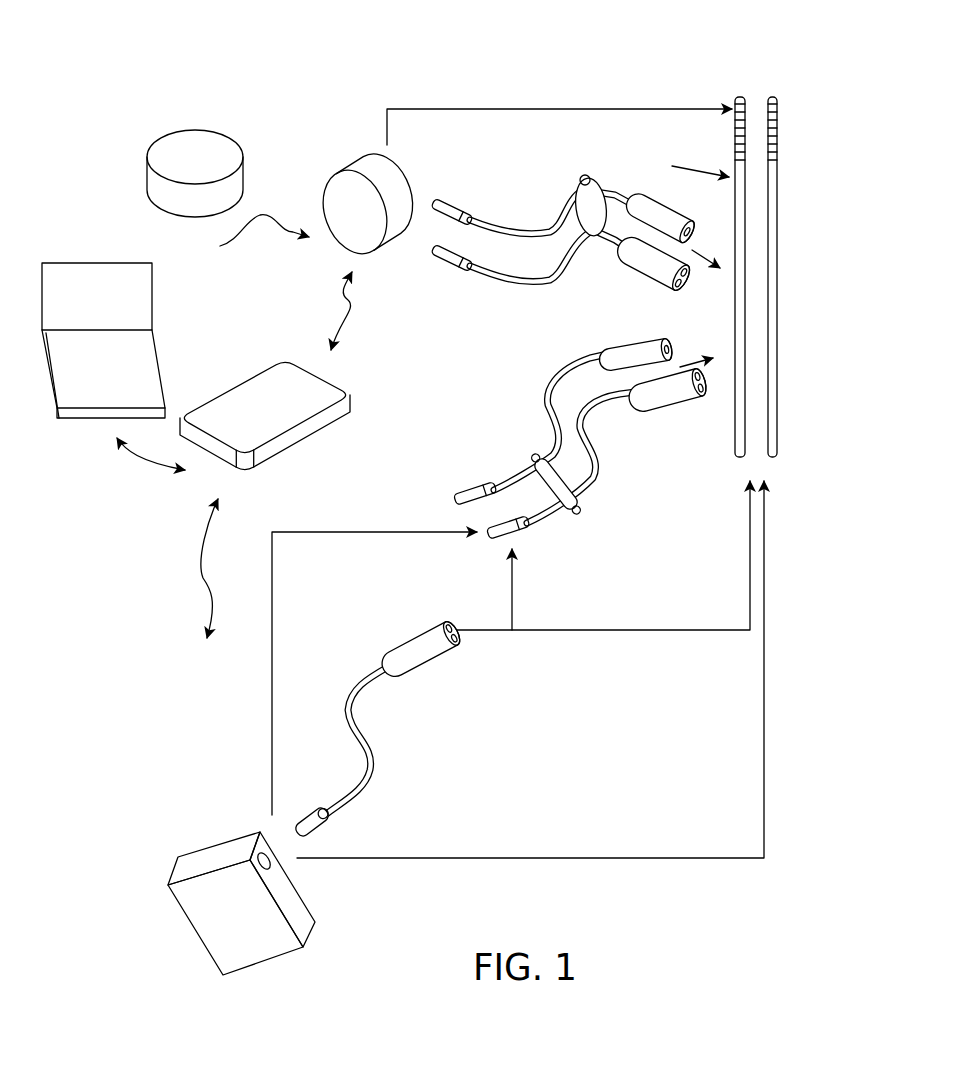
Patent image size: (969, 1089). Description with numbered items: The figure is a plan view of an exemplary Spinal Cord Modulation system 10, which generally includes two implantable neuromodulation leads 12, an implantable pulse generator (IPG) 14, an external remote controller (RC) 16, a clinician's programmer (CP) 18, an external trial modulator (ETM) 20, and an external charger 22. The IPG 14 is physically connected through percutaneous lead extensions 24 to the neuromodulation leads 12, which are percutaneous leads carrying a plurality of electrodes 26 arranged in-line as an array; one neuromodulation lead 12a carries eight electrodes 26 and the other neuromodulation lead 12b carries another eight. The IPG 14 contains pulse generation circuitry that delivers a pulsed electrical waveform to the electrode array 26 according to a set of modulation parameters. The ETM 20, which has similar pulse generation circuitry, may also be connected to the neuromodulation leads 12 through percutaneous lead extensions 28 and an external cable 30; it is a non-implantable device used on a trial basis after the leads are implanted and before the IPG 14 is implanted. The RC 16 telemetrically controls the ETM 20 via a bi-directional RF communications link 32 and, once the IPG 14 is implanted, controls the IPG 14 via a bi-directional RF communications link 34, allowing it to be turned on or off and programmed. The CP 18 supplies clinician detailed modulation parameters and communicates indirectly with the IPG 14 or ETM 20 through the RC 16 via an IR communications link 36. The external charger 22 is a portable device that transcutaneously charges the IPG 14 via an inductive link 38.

The SCM system 10 is at (536, 62).
The implantable neuromodulation leads 12 is at (757, 92).
The neuromodulation lead 12a is at (745, 258).
The neuromodulation lead 12b is at (777, 305).
The implantable pulse generator (IPG) 14 is at (352, 170).
The external remote controller (RC) 16 is at (277, 380).
The clinician's programmer (CP) 18 is at (82, 278).
The external trial modulator (ETM) 20 is at (215, 855).
The external charger 22 is at (195, 140).
The percutaneous lead extensions 24 is at (580, 180).
The electrodes 26 is at (745, 130).
The percutaneous lead extensions 28 is at (537, 462).
The external cable 30 is at (370, 672).
The bi-directional RF communications link 32 is at (212, 612).
The bi-directional RF communications link 34 is at (345, 328).
The IR communications link 36 is at (141, 465).
The inductive link 38 is at (250, 236).